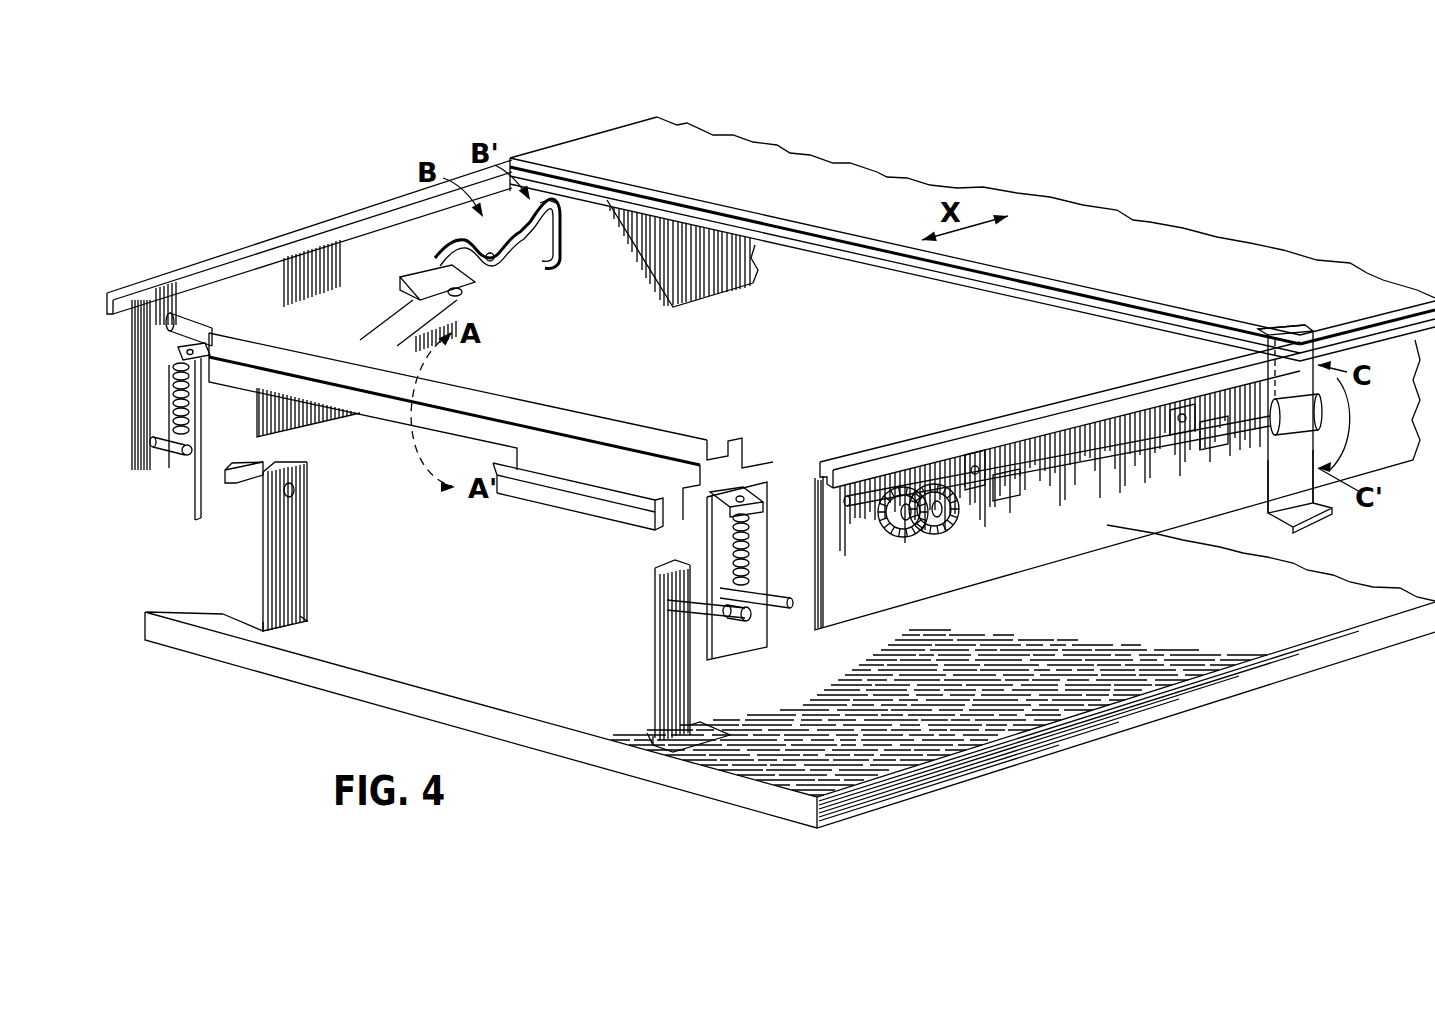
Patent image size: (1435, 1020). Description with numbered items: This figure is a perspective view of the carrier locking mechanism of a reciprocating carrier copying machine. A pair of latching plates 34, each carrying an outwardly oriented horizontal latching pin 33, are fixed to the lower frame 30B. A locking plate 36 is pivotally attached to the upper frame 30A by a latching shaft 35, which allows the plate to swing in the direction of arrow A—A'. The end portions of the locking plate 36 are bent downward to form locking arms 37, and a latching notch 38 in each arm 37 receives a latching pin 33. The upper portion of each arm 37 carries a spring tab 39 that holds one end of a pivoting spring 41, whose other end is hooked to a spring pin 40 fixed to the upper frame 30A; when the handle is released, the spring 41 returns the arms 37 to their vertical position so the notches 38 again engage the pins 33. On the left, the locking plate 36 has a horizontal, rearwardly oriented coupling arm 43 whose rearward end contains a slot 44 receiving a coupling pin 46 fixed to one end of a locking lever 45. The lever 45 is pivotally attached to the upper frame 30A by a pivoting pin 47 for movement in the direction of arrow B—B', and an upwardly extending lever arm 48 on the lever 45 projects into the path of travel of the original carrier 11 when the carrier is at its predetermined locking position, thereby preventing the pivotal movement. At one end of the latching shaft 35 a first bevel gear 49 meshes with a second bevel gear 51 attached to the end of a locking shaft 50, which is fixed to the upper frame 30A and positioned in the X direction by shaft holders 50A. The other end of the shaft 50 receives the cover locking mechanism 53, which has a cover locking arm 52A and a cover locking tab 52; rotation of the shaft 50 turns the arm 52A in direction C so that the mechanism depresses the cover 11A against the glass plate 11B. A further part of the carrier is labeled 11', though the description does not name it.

The original carrier 11 is at (972, 239).
The cover 11A is at (797, 178).
The glass plate 11B is at (793, 243).
The second guide rail 11' is at (905, 272).
The upper frame 30A is at (700, 265).
The lower frame 30B is at (1135, 683).
The latching pin 33 is at (250, 502).
The latching plate 34 is at (290, 590).
The latching shaft 35 is at (205, 322).
The locking plate 36 is at (574, 408).
The locking arm 37 is at (194, 522).
The latching notch 38 is at (270, 462).
The spring tab 39 is at (185, 352).
The spring pin 40 is at (185, 455).
The pivoting spring 41 is at (160, 395).
The coupling arm 43 is at (375, 302).
The slot 44 is at (445, 295).
The locking lever 45 is at (560, 250).
The coupling pin 46 is at (476, 285).
The pivoting pin 47 is at (512, 262).
The lever arm 48 is at (557, 206).
The first bevel gear 49 is at (892, 538).
The locking shaft 50 is at (1088, 485).
The shaft holder 50A is at (1178, 425).
The second bevel gear 51 is at (940, 520).
The cover locking tab 52 is at (1278, 325).
The cover locking arm 52A is at (1285, 483).
The cover locking mechanism 53 is at (1300, 452).